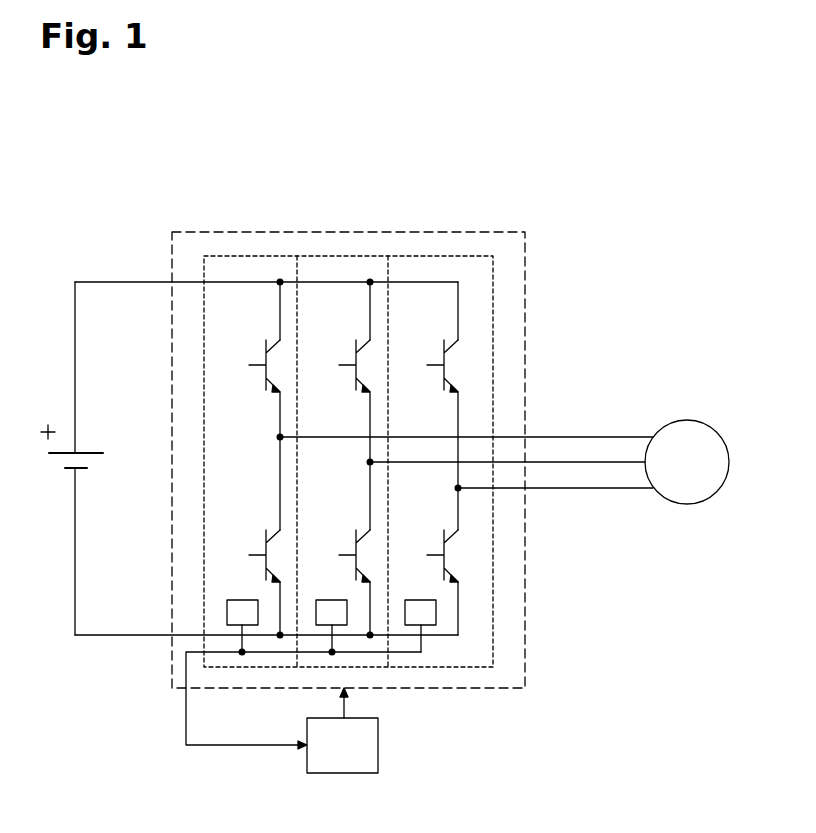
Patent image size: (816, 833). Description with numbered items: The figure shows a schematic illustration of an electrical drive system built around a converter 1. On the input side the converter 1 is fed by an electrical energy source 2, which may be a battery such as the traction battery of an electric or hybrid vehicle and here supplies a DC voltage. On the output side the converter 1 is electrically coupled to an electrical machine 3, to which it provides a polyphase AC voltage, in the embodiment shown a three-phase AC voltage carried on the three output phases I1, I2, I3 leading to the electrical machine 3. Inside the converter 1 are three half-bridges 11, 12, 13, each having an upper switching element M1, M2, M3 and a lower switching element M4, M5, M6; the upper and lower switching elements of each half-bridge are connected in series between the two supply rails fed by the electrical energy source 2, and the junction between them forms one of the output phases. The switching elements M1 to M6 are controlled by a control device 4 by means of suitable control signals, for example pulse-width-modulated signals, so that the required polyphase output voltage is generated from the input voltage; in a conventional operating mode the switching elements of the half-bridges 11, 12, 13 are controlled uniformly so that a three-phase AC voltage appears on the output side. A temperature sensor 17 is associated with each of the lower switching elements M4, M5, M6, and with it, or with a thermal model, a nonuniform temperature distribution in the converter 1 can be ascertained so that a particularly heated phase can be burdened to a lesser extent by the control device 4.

The converter 1 is at (525, 282).
The electrical energy source 2 is at (96, 462).
The electrical machine 3 is at (687, 420).
The control device 4 is at (378, 745).
The half-bridge 11 is at (253, 256).
The half-bridge 12 is at (341, 256).
The half-bridge 13 is at (449, 256).
The temperature sensor 17 is at (242, 600).
The upper switching element M1 is at (267, 352).
The upper switching element M2 is at (357, 352).
The upper switching element M3 is at (445, 352).
The lower switching element M4 is at (267, 542).
The lower switching element M5 is at (357, 542).
The lower switching element M6 is at (445, 542).
The first phase current I1 is at (567, 437).
The second phase current I2 is at (605, 462).
The third phase current I3 is at (567, 490).